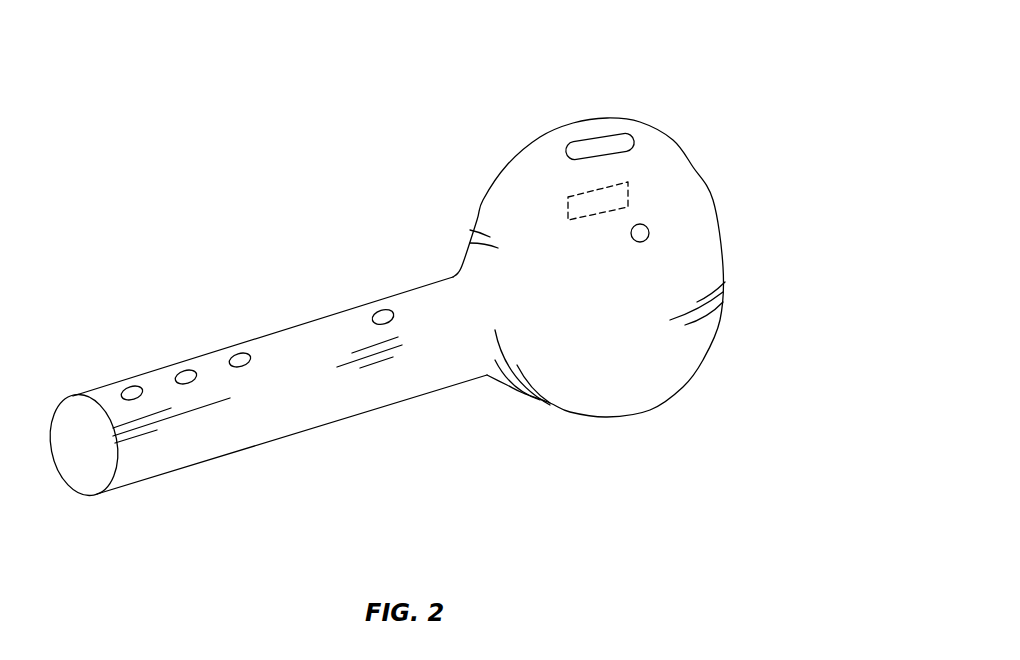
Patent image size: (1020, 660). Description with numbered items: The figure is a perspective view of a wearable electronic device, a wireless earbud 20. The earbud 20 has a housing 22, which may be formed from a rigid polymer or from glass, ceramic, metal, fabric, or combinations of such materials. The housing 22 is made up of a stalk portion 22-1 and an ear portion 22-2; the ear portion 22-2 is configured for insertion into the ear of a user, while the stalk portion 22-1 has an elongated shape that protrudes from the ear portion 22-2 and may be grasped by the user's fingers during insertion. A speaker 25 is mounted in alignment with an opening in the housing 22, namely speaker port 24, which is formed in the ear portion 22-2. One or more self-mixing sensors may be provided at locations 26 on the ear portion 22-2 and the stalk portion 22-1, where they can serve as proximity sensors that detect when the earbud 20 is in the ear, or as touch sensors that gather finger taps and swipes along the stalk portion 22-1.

The wireless earbud 20 is at (755, 95).
The housing 22 is at (68, 486).
The stalk portion 22-1 is at (62, 368).
The ear portion 22-2 is at (433, 150).
The speaker port 24 is at (630, 150).
The speaker 25 is at (587, 219).
The locations 26 is at (133, 400).